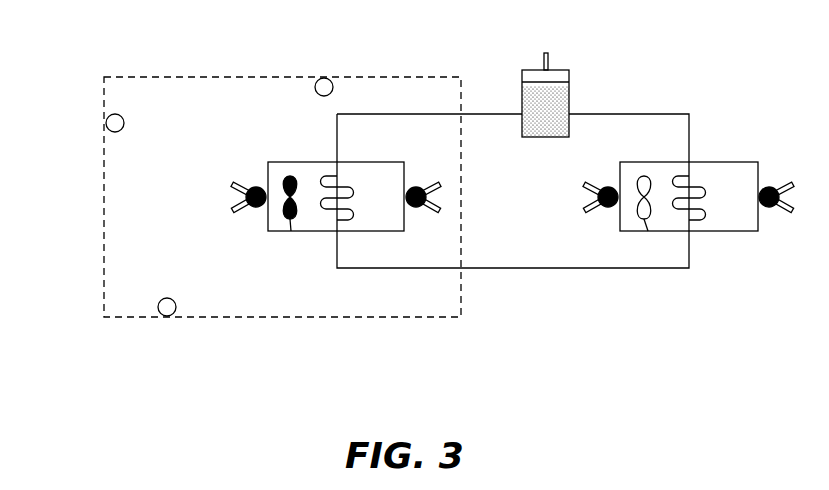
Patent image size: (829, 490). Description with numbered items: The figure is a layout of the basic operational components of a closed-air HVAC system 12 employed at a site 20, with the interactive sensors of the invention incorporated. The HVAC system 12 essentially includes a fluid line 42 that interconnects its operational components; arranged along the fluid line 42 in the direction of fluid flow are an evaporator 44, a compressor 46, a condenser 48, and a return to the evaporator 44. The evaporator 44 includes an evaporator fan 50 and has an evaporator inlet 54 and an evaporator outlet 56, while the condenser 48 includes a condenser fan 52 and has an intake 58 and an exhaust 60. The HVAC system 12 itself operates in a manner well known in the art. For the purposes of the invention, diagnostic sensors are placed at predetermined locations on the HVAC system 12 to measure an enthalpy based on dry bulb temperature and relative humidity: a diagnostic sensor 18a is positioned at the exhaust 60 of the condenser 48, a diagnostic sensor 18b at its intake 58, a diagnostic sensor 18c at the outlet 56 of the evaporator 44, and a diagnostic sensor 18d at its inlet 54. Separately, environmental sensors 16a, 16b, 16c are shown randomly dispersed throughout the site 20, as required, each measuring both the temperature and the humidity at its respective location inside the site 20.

The HVAC system 12 is at (513, 189).
The environmental sensor 16a is at (326, 80).
The environmental sensor 16b is at (107, 123).
The environmental sensor 16c is at (165, 315).
The diagnostic sensor 18a is at (778, 184).
The diagnostic sensor 18b is at (600, 184).
The diagnostic sensor 18c is at (428, 183).
The diagnostic sensor 18d is at (247, 184).
The site 20 is at (120, 326).
The fluid line 42 is at (641, 113).
The evaporator 44 is at (387, 207).
The compressor 46 is at (559, 69).
The condenser 48 is at (742, 207).
The evaporator fan 50 is at (290, 221).
The condenser fan 52 is at (644, 221).
The evaporator inlet 54 is at (256, 208).
The evaporator outlet 56 is at (416, 208).
The intake 58 is at (608, 208).
The exhaust 60 is at (770, 208).